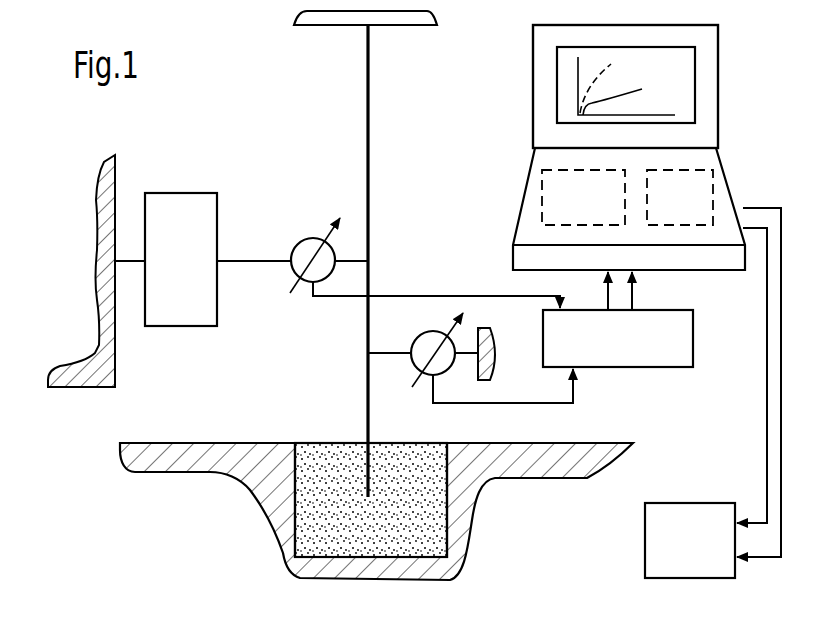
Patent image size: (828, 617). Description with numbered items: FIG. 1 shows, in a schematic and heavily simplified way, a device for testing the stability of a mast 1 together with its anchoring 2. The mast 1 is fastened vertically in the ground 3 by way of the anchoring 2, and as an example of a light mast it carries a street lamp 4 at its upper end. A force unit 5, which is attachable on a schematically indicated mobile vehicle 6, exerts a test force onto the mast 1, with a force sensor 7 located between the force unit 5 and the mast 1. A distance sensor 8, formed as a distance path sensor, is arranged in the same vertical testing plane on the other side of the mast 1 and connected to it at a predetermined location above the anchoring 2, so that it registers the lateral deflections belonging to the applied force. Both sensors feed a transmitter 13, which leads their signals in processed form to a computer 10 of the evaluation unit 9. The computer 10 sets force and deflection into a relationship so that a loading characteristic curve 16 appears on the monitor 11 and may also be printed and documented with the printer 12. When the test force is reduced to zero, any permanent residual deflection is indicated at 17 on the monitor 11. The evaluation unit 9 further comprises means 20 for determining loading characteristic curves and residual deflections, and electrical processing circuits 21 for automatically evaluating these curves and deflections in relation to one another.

The mast 1 is at (370, 162).
The anchoring 2 is at (313, 533).
The ground 3 is at (205, 462).
The street lamp 4 is at (307, 23).
The force unit 5 is at (188, 203).
The vehicle 6 is at (113, 353).
The force sensor 7 is at (303, 250).
The distance sensor 8 is at (422, 343).
The evaluation unit 9 is at (612, 169).
The computer 10 is at (733, 265).
The monitor 11 is at (708, 78).
The printer 12 is at (683, 508).
The transmitter 13 is at (672, 343).
The loading characteristic curve 16 is at (610, 66).
The permanent residual deflection 17 is at (628, 92).
The means for determining loading characteristic curves 20 is at (555, 198).
The electrical processing circuits 21 is at (693, 193).